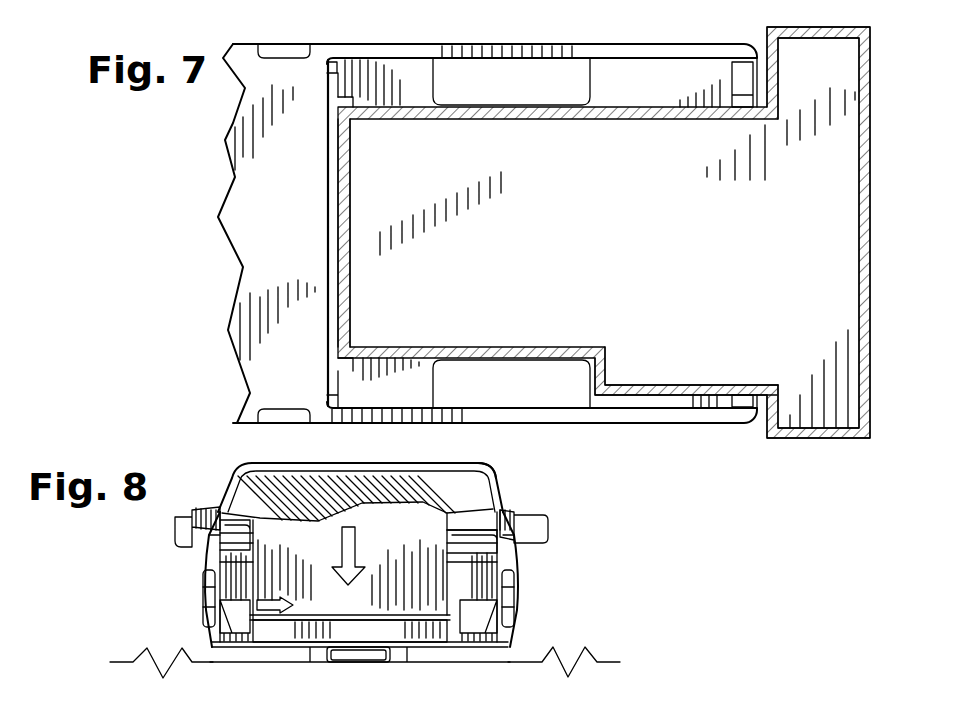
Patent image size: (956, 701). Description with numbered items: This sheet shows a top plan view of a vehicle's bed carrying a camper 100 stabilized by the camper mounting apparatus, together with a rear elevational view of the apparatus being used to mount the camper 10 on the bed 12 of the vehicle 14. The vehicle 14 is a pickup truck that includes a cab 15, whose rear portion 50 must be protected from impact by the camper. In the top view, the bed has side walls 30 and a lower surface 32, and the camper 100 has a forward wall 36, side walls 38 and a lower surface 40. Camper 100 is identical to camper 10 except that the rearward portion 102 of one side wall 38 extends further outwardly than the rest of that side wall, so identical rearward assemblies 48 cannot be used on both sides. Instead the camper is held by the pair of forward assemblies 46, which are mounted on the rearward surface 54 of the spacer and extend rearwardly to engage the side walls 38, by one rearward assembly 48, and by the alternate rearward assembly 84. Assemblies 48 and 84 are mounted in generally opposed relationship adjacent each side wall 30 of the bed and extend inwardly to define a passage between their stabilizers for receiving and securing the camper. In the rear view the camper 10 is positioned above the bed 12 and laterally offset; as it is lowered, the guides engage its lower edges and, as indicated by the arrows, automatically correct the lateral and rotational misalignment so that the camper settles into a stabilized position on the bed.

In FIG. 8, the camper 10 is at (252, 505).
In FIG. 8, the bed 12 is at (521, 586).
In FIG. 8, the vehicle 14 is at (513, 477).
In FIG. 8, the cab 15 is at (503, 496).
In FIG. 7, the side walls 30 is at (652, 59).
In FIG. 7, the lower surface 32 is at (609, 90).
In FIG. 7, the forward wall 36 is at (336, 223).
In FIG. 7, the side walls 38 is at (607, 108).
In FIG. 7, the lower surface 40 is at (622, 255).
In FIG. 8, the lower surface 40 is at (350, 623).
In FIG. 7, the forward assemblies 46 is at (360, 103).
In FIG. 7, the rearward assemblies 48 is at (722, 78).
In FIG. 8, the rearward assemblies 48 is at (203, 635).
In FIG. 7, the rear portion 50 is at (331, 183).
In FIG. 8, the rear portion 50 is at (466, 502).
In FIG. 7, the rearward surface 54 is at (347, 273).
In FIG. 8, the rearward surface 54 is at (402, 632).
In FIG. 7, the assembly 84 is at (724, 402).
In FIG. 7, the camper 100 is at (818, 446).
In FIG. 7, the rearward portion 102 is at (694, 387).